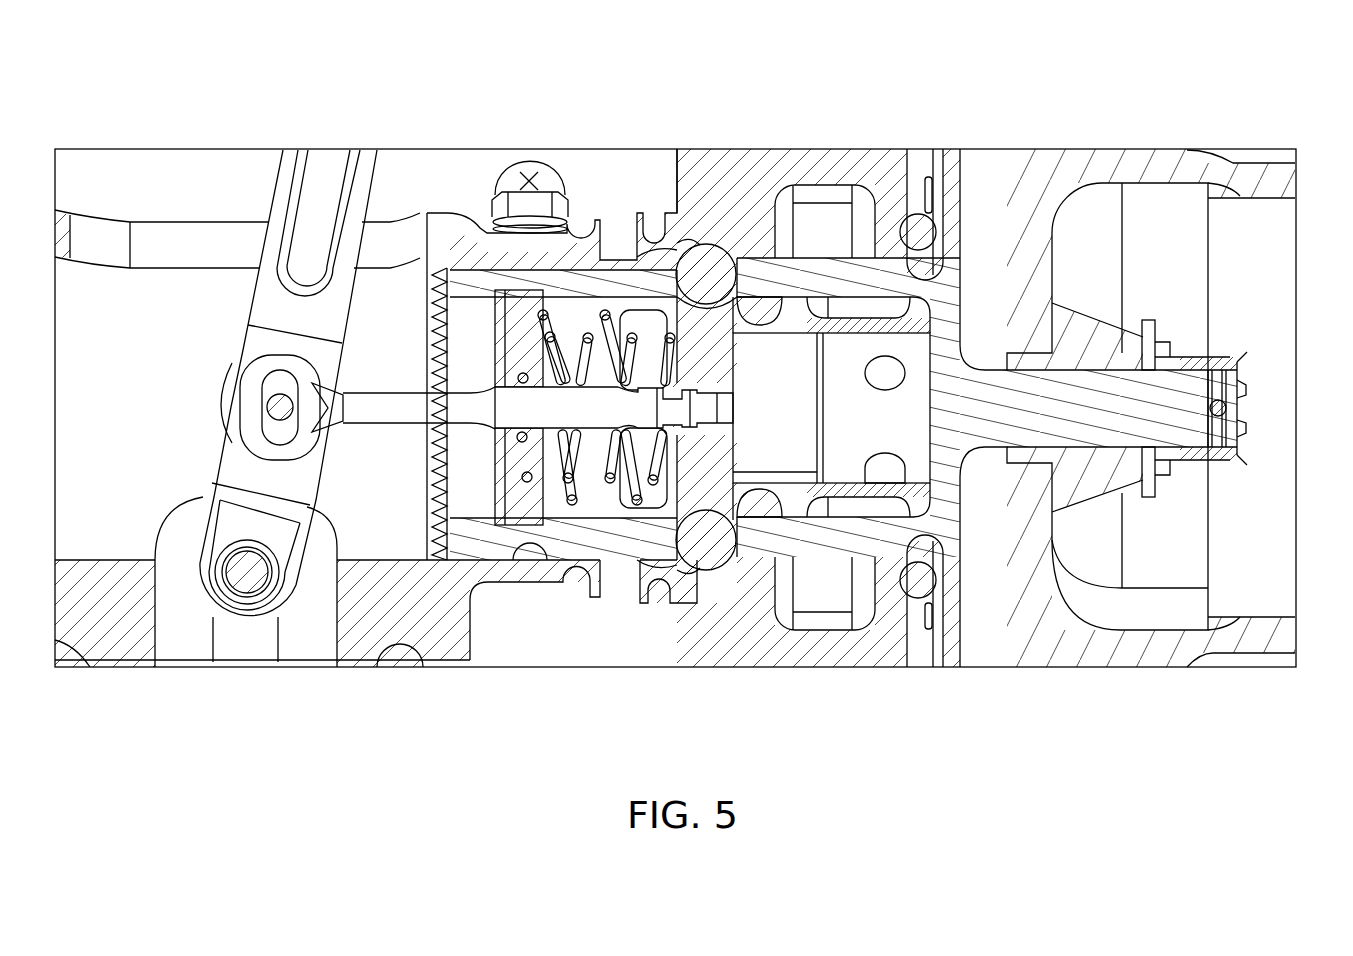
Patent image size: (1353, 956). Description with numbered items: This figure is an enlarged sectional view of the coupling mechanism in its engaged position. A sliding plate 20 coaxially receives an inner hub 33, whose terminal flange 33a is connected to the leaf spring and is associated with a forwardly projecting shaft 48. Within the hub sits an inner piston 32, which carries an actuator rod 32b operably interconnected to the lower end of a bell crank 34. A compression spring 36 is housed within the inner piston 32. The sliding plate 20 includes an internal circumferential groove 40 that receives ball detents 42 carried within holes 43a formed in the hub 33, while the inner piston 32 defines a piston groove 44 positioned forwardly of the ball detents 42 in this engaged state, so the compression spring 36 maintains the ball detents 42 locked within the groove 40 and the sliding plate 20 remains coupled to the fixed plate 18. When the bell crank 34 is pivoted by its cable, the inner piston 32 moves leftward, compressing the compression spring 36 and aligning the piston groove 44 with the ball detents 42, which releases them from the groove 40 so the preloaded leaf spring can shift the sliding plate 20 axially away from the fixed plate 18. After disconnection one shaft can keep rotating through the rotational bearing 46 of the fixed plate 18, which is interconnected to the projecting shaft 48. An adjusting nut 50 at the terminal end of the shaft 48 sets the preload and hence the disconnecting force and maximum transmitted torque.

The fixed plate 18 is at (1050, 172).
The sliding plate 20 is at (830, 158).
The inner piston 32 is at (823, 507).
The actuator rod 32b is at (380, 407).
The inner hub 33 is at (478, 280).
The terminal flange 33a is at (953, 600).
The bell crank 34 is at (323, 173).
The compression spring 36 is at (567, 443).
The internal circumferential groove 40 is at (707, 267).
The ball detents 42 is at (665, 255).
The holes 43a is at (641, 258).
The piston groove 44 is at (782, 327).
The rotational bearing 46 is at (1147, 410).
The projecting shaft 48 is at (990, 412).
The adjusting nut 50 is at (1233, 392).